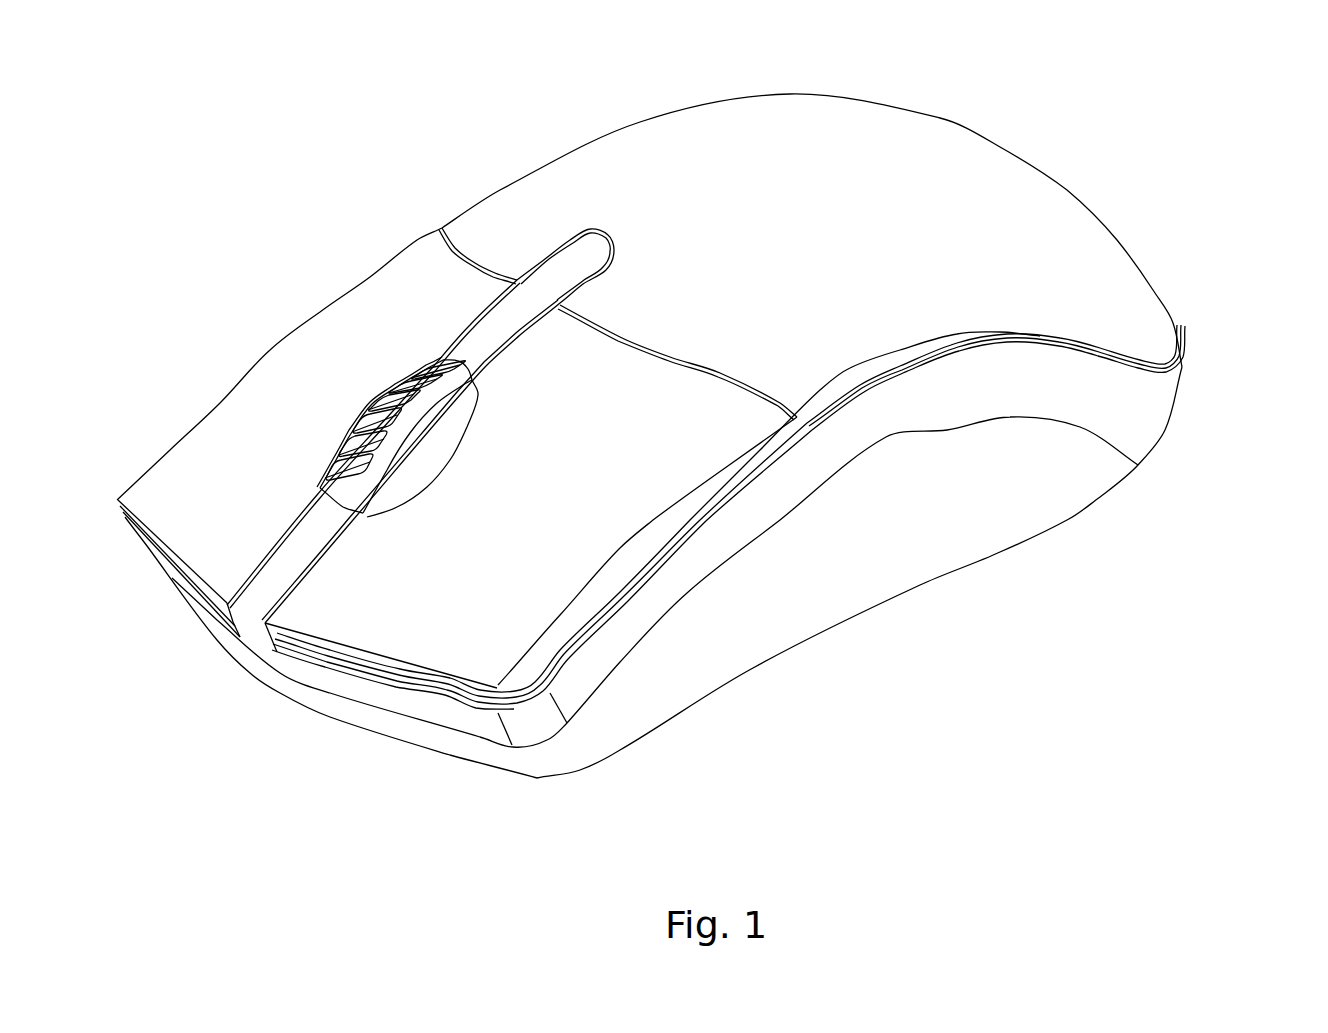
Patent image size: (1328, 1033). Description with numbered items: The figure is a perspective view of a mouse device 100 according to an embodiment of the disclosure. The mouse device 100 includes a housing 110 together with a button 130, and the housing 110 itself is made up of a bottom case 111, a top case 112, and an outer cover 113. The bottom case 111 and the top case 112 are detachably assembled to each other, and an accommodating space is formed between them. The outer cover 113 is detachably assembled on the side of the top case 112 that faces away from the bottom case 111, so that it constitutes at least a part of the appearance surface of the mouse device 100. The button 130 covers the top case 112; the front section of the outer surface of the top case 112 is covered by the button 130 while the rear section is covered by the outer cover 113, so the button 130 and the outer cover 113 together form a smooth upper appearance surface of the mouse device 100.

The mouse device 100 is at (703, 404).
The housing 110 is at (716, 436).
The bottom case 111 is at (686, 572).
The top case 112 is at (1162, 398).
The outer cover 113 is at (1150, 305).
The button 130 is at (425, 642).